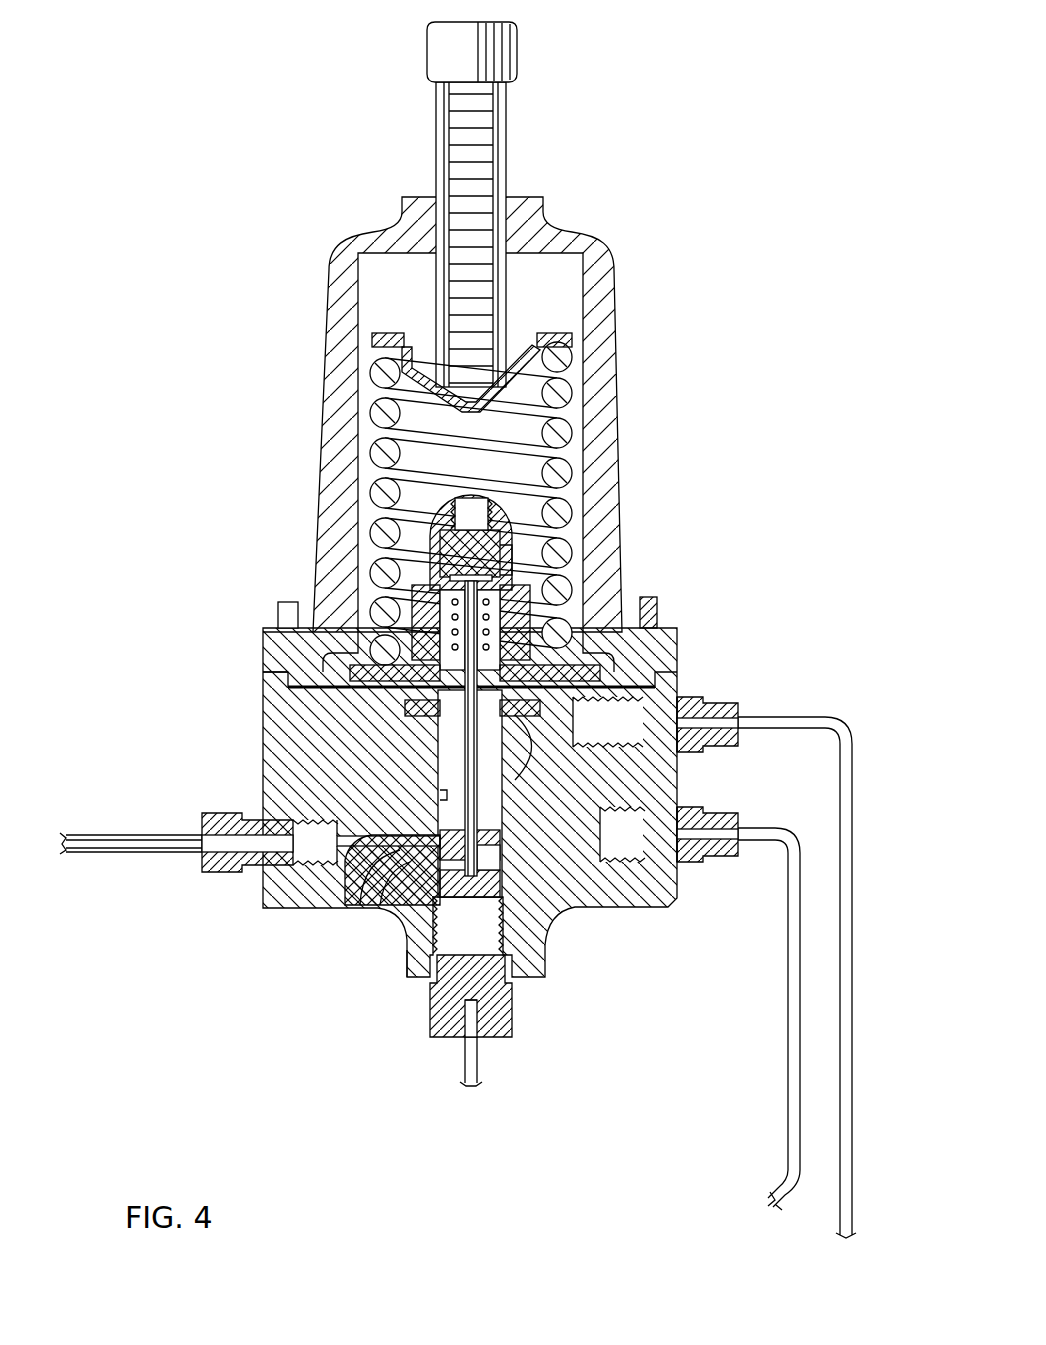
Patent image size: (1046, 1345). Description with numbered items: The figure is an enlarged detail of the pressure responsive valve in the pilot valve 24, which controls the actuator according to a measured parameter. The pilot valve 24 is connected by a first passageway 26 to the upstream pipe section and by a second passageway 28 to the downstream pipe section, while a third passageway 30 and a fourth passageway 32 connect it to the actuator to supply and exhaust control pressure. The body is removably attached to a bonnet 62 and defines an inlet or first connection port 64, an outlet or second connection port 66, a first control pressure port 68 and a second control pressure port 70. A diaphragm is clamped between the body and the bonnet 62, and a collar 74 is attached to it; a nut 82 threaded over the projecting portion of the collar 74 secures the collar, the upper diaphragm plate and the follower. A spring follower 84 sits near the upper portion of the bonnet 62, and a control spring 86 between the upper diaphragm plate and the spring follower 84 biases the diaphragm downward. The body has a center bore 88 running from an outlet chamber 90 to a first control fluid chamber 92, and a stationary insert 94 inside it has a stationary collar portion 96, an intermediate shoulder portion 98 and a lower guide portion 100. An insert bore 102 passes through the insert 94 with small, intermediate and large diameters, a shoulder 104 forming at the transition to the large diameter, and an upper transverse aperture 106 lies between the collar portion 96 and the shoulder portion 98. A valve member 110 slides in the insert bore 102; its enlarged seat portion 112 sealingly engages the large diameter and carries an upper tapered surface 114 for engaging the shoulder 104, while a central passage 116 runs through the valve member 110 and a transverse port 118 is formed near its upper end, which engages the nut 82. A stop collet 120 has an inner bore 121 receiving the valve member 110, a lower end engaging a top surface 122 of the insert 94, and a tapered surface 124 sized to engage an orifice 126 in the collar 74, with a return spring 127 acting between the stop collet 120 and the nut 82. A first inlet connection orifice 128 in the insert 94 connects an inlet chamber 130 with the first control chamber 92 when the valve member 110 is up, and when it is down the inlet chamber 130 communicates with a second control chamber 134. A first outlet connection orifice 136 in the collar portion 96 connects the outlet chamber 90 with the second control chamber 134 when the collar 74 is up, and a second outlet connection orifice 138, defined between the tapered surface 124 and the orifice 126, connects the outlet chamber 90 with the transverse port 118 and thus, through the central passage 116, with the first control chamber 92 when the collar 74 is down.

The pilot valve 24 is at (297, 363).
The first passageway 26 is at (108, 852).
The second passageway 28 is at (840, 805).
The third passageway 30 is at (480, 1068).
The fourth passageway 32 is at (785, 1035).
The bonnet 62 is at (337, 266).
The inlet or first connection port 64 is at (205, 855).
The outlet or second connection port 66 is at (740, 705).
The first control pressure port 68 is at (465, 1040).
The second control pressure port 70 is at (740, 848).
The collar 74 is at (617, 672).
The nut 82 is at (442, 513).
The spring follower 84 is at (565, 328).
The control spring 86 is at (562, 358).
The center bore 88 is at (495, 950).
The outlet chamber 90 is at (682, 740).
The first control fluid chamber 92 is at (512, 985).
The stationary insert 94 is at (433, 775).
The stationary collar portion 96 is at (570, 725).
The intermediate shoulder portion 98 is at (447, 795).
The lower guide portion 100 is at (407, 950).
The insert bore 102 is at (470, 912).
The shoulder 104 is at (440, 838).
The upper transverse aperture 106 is at (540, 762).
The valve member 110 is at (520, 838).
The enlarged seat portion 112 is at (400, 900).
The upper tapered surface 114 is at (343, 902).
The central passage 116 is at (525, 596).
The transverse port 118 is at (452, 582).
The stop collet 120 is at (560, 610).
The inner bore 121 is at (660, 613).
The top surface 122 is at (437, 778).
The tapered surface 124 is at (345, 672).
The orifice 126 is at (437, 702).
The return spring 127 is at (515, 580).
The first inlet connection orifice 128 is at (395, 905).
The inlet chamber 130 is at (300, 866).
The second control chamber 134 is at (690, 868).
The first outlet connection orifice 136 is at (540, 745).
The second outlet connection orifice 138 is at (593, 652).